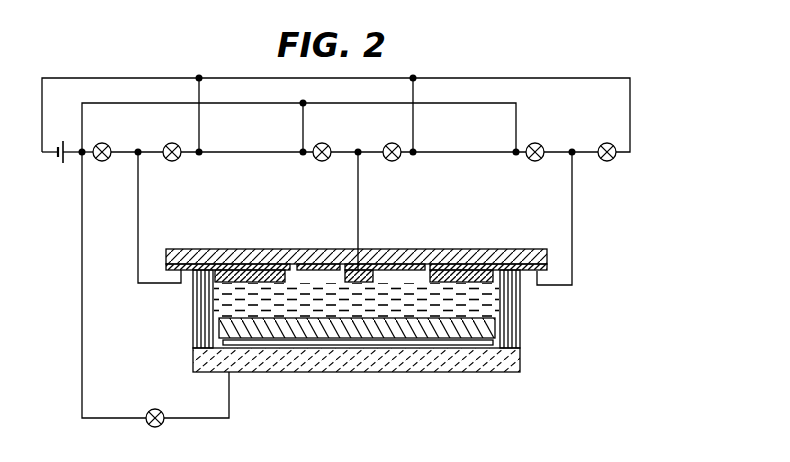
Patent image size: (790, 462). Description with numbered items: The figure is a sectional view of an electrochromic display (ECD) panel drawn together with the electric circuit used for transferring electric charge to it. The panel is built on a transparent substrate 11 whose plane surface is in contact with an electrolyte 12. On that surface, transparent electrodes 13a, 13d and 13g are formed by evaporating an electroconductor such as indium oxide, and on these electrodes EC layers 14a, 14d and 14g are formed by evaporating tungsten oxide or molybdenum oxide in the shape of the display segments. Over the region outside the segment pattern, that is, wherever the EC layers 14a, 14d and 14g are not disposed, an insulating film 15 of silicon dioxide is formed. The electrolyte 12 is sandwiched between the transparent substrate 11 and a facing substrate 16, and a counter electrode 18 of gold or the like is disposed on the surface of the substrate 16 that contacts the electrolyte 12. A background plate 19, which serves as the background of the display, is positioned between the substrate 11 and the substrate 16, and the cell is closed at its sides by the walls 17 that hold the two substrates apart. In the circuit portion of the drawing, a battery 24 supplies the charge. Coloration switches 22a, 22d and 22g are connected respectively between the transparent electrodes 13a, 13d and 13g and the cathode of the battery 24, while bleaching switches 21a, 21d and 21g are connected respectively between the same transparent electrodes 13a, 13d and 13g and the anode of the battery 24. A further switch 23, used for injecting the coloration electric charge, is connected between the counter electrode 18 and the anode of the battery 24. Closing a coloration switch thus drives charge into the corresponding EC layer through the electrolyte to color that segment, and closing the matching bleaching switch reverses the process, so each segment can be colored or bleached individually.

The transparent substrate 11 is at (508, 249).
The electrolyte 12 is at (300, 312).
The transparent electrode 13d is at (270, 270).
The transparent electrode 13g is at (365, 270).
The transparent electrode 13a is at (455, 272).
The EC layer 14d is at (274, 283).
The EC layer 14g is at (355, 283).
The EC layer 14a is at (445, 283).
The insulating film 15 is at (227, 265).
The substrate 16 is at (483, 366).
The spacer wall 17 is at (193, 308).
The counter electrode 18 is at (427, 346).
The background plate 19 is at (368, 332).
The bleaching switch 21d is at (107, 137).
The coloration switch 22d is at (170, 143).
The bleaching switch 21g is at (322, 143).
The coloration switch 22g is at (388, 143).
The bleaching switch 21a is at (535, 143).
The coloration switch 22a is at (607, 143).
The switch 23 is at (163, 401).
The battery 24 is at (57, 161).